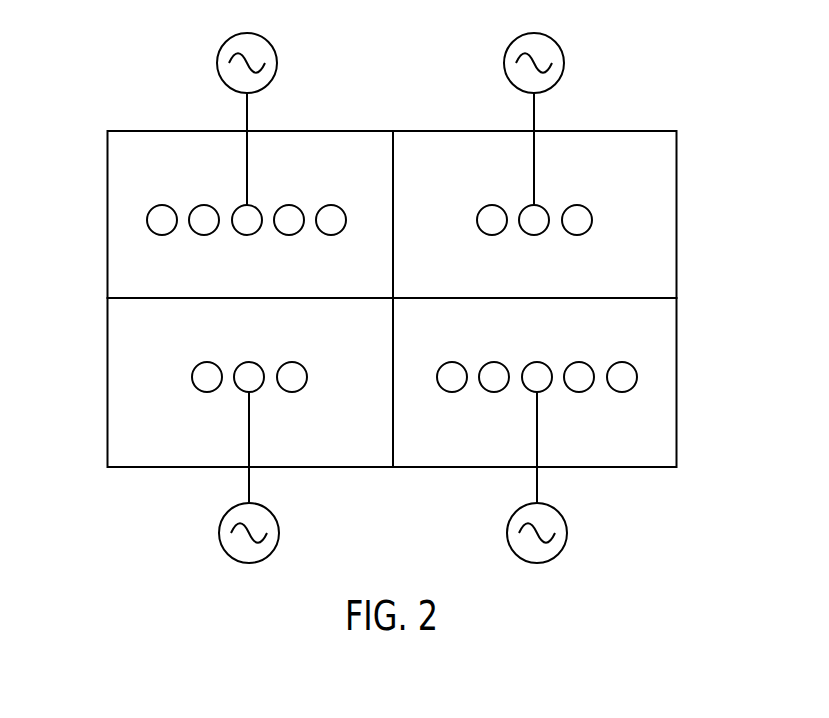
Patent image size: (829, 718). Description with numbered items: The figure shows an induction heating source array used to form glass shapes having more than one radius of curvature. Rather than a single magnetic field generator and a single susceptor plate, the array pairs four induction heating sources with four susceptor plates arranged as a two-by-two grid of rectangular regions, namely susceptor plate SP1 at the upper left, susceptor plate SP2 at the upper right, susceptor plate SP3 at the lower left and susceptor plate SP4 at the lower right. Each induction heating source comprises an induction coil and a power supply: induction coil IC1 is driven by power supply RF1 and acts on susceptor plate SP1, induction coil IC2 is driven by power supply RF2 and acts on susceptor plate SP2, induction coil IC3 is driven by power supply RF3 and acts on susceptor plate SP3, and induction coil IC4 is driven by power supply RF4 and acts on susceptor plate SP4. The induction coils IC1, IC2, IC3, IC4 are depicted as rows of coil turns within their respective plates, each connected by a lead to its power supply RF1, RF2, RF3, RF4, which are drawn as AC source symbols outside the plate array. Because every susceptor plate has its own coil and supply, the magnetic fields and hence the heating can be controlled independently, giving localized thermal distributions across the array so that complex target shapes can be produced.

The susceptor plate SP1 is at (107, 150).
The susceptor plate SP2 is at (677, 148).
The susceptor plate SP3 is at (107, 328).
The susceptor plate SP4 is at (677, 328).
The induction coil IC1 is at (198, 207).
The induction coil IC2 is at (583, 207).
The induction coil IC3 is at (199, 364).
The induction coil IC4 is at (585, 364).
The power supply RF1 is at (225, 43).
The power supply RF2 is at (555, 42).
The power supply RF3 is at (228, 555).
The power supply RF4 is at (558, 554).